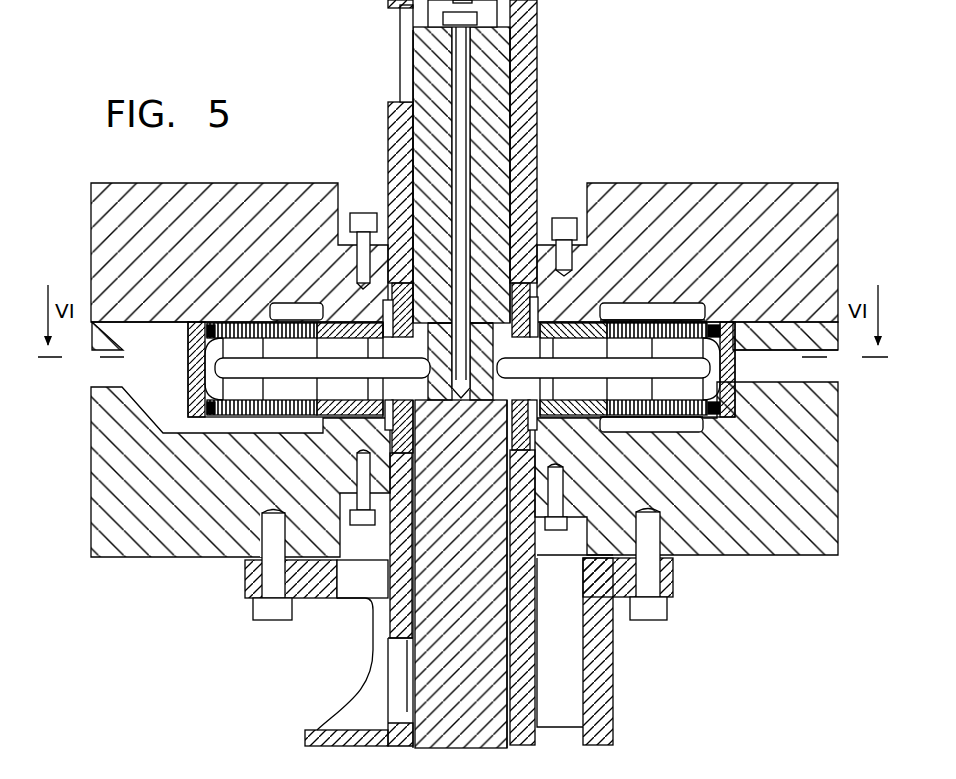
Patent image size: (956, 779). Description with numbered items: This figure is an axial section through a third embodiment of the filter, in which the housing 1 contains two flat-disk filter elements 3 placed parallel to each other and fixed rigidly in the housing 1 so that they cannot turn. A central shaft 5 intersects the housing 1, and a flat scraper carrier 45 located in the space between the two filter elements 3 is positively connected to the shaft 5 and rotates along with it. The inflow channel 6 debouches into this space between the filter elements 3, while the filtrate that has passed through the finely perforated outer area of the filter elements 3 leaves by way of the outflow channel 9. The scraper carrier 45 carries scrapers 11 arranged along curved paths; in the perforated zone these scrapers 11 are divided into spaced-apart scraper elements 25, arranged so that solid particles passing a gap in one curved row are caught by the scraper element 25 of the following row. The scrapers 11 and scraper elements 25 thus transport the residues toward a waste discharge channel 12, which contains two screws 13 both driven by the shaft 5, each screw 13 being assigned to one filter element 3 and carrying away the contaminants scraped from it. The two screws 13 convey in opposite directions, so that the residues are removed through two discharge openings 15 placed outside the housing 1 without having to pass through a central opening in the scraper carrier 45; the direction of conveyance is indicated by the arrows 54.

The housing 1 is at (779, 180).
The filter element 3 is at (672, 300).
The shaft 5 is at (480, 730).
The inflow channel 6 is at (826, 377).
The outflow channel 9 is at (100, 376).
The scrapers 11 is at (308, 341).
The waste discharge channel 12 is at (413, 105).
The screw 13 is at (410, 107).
The discharge opening 15 is at (407, 62).
The scraper element 25 is at (580, 350).
The scraper carrier 45 is at (631, 316).
The arrows 54 is at (560, 300).